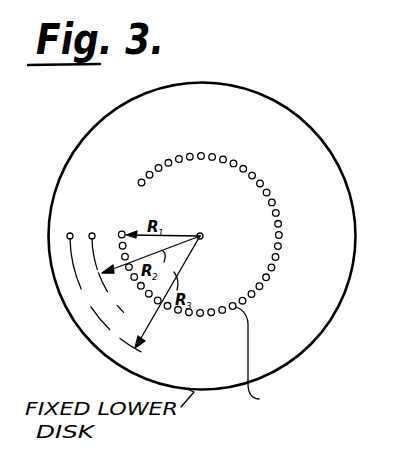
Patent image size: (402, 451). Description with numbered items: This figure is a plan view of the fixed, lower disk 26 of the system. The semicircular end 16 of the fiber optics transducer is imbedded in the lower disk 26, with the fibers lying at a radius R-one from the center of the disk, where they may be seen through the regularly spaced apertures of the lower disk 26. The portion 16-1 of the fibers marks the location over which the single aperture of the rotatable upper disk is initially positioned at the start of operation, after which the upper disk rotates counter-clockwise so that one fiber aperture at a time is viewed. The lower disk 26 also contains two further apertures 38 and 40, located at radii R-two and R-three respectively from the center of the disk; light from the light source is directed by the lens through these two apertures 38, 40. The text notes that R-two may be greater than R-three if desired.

The fixed lower disk 26 is at (311, 139).
The semicircular end of the fiber optics transducer 16 is at (263, 188).
The portion of the fibers 16-1 is at (125, 231).
The aperture in the lower disk 40 is at (70, 233).
The aperture in the lower disk 38 is at (92, 233).